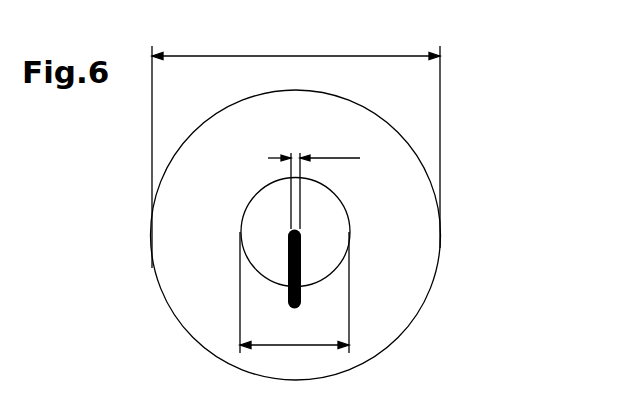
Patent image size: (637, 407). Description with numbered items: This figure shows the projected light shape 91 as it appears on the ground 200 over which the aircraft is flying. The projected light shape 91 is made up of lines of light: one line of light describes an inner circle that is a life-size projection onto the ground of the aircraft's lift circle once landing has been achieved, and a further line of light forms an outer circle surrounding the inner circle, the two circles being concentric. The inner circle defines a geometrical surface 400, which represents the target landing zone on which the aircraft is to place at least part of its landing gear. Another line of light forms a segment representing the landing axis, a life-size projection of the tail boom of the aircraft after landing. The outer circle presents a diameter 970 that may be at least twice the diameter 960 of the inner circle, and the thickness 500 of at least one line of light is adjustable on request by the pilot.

The ground 200 is at (528, 230).
The projected light shape 91 is at (482, 122).
The diameter of the outer circle 970 is at (296, 147).
The thickness of a line of light 500 is at (314, 180).
The geometrical surface 400 is at (287, 237).
The diameter of the inner circle 960 is at (294, 292).